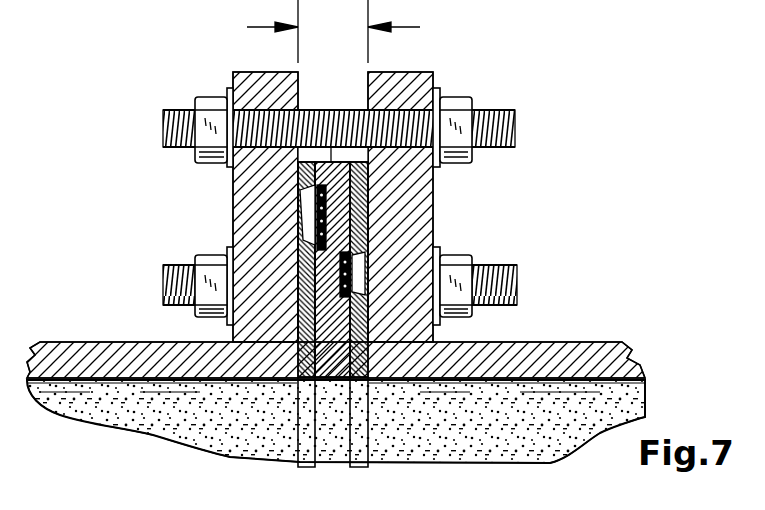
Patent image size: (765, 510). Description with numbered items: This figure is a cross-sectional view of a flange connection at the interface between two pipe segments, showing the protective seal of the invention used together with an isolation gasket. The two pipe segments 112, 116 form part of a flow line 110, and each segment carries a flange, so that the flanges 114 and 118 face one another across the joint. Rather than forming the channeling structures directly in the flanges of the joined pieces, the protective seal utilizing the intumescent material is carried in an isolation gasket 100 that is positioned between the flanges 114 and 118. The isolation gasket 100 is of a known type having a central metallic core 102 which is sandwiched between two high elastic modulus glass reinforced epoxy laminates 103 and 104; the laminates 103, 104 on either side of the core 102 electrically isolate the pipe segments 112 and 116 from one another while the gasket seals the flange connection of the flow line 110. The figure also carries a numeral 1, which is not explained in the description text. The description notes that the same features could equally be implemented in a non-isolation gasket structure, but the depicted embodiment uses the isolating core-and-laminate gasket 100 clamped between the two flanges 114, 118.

The pin 1 is at (312, 262).
The isolation gasket 100 is at (343, 108).
The central metallic core 102 is at (340, 203).
The glass reinforced epoxy laminate 103 is at (306, 196).
The glass reinforced epoxy laminate 104 is at (355, 198).
The flow line 110 is at (548, 216).
The pipe segment 112 is at (127, 342).
The flange 114 is at (240, 72).
The pipe segment 116 is at (583, 343).
The flange 118 is at (415, 80).